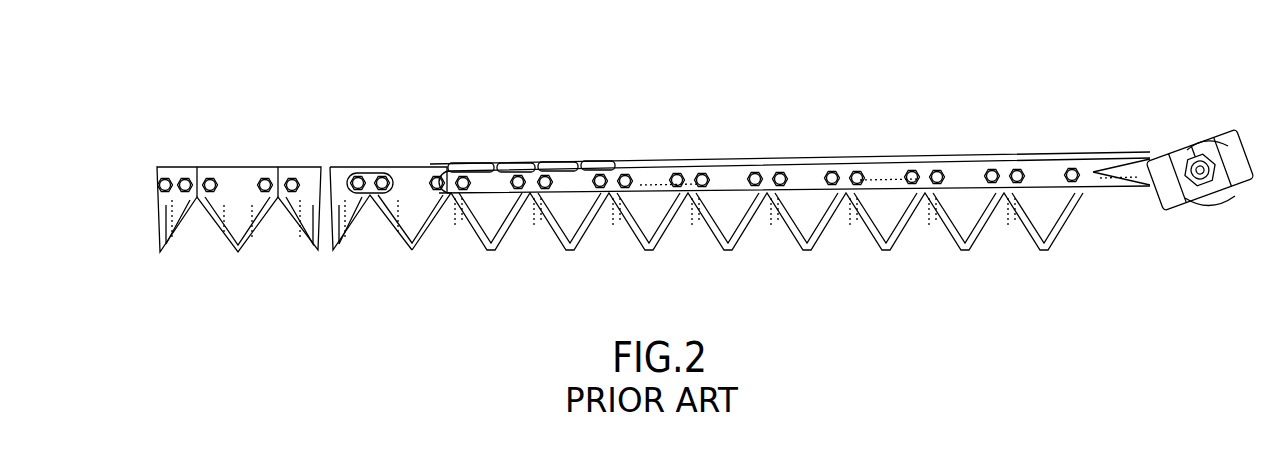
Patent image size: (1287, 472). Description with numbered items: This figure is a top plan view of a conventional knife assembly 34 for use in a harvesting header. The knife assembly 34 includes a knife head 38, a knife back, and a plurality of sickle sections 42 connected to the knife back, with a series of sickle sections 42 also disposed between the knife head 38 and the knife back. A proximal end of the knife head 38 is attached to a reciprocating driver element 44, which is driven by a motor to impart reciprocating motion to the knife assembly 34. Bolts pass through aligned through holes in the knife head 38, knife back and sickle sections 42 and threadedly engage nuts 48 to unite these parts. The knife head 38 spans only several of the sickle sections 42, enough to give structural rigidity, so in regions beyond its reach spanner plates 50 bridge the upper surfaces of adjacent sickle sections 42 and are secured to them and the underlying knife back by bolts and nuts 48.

The knife assembly 34 is at (374, 84).
The knife head 38 is at (884, 170).
The sickle sections 42 is at (413, 252).
The reciprocating driver element 44 is at (1237, 140).
The nuts 48 is at (703, 176).
The spanner plates 50 is at (370, 166).